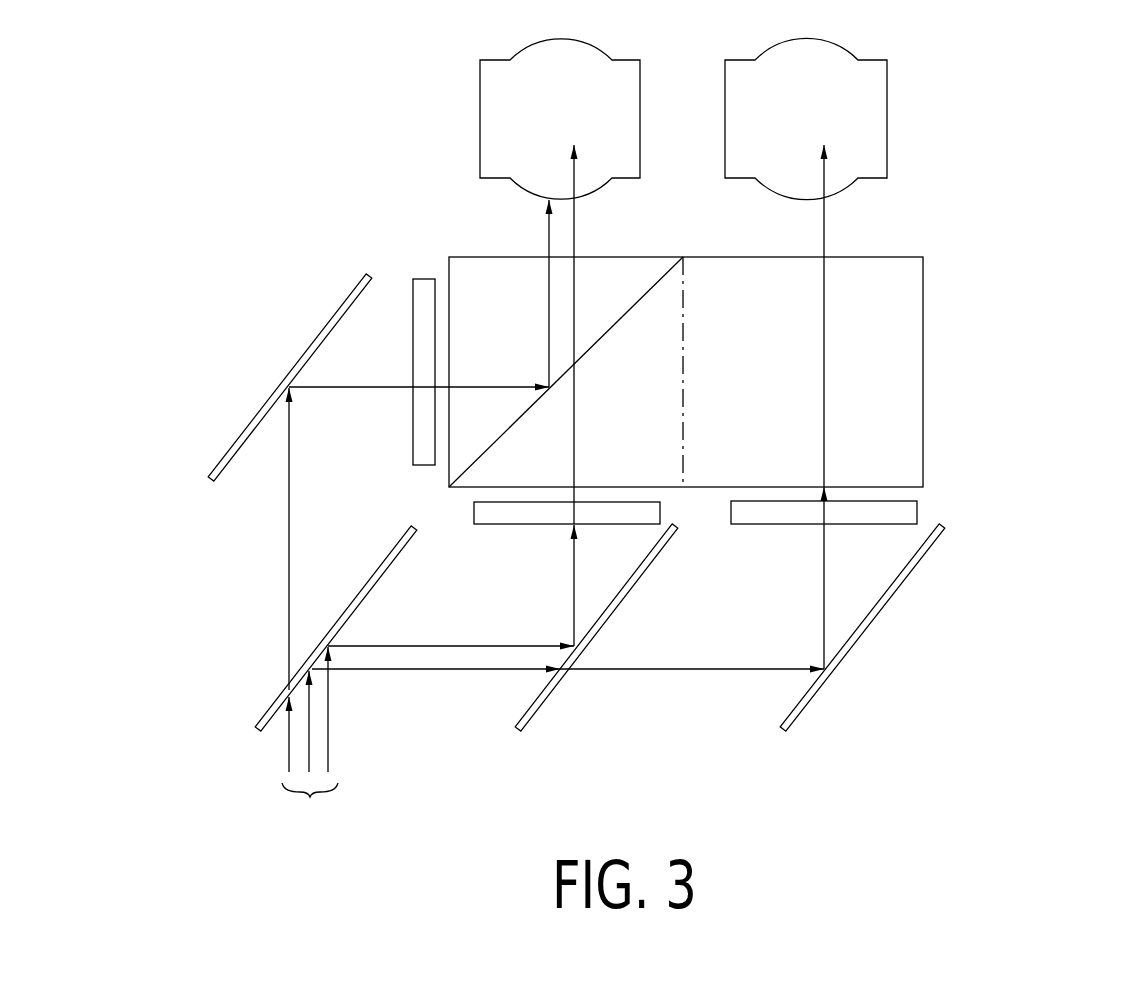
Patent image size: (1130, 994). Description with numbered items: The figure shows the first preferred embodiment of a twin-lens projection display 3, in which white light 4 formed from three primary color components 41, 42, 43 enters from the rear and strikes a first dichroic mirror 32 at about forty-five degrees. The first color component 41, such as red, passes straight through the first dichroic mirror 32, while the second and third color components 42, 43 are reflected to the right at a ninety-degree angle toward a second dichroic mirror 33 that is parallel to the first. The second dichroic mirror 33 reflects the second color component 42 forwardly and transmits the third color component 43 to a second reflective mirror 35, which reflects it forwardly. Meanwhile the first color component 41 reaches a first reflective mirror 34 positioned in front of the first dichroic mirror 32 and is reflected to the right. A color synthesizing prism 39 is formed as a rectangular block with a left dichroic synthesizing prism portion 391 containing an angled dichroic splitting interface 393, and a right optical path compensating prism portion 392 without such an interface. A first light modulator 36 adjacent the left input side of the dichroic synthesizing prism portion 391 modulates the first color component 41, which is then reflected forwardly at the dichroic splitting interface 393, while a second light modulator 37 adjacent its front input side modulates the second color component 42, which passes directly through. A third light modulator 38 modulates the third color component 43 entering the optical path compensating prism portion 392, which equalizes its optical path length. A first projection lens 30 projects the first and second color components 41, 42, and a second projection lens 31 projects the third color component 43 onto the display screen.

The twin-lens projection display 3 is at (1063, 246).
The first projection lens 30 is at (578, 65).
The second projection lens 31 is at (832, 63).
The first dichroic mirror 32 is at (260, 708).
The second dichroic mirror 33 is at (540, 703).
The first reflective mirror 34 is at (347, 308).
The second reflective mirror 35 is at (898, 590).
The first light modulator 36 is at (425, 287).
The second light modulator 37 is at (537, 514).
The third light modulator 38 is at (893, 512).
The color synthesizing prism 39 is at (920, 307).
The dichroic synthesizing prism portion 391 is at (527, 448).
The optical path compensating prism portion 392 is at (905, 448).
The dichroic splitting interface 393 is at (627, 308).
The white light 4 is at (310, 797).
The first color component 41 is at (287, 535).
The second color component 42 is at (463, 646).
The third color component 43 is at (453, 672).